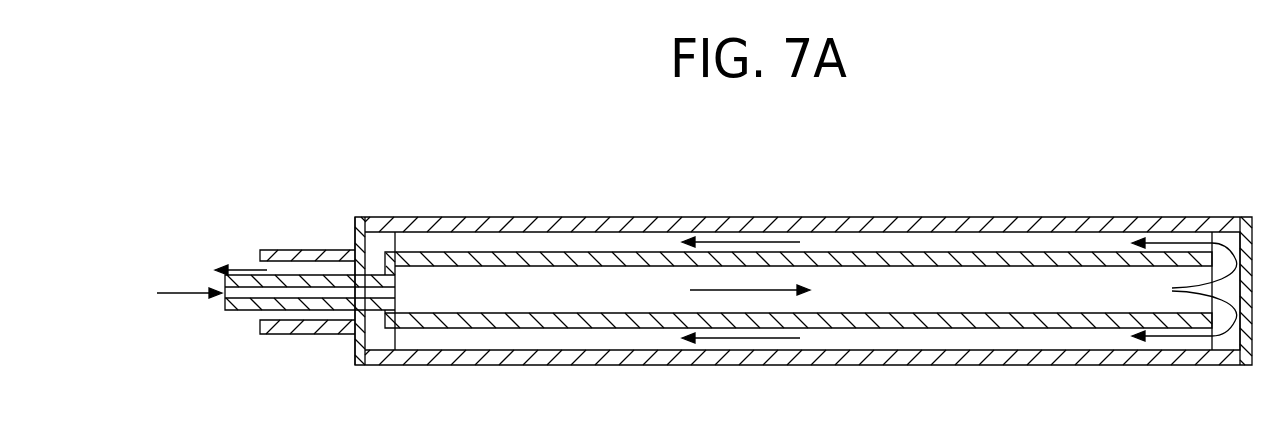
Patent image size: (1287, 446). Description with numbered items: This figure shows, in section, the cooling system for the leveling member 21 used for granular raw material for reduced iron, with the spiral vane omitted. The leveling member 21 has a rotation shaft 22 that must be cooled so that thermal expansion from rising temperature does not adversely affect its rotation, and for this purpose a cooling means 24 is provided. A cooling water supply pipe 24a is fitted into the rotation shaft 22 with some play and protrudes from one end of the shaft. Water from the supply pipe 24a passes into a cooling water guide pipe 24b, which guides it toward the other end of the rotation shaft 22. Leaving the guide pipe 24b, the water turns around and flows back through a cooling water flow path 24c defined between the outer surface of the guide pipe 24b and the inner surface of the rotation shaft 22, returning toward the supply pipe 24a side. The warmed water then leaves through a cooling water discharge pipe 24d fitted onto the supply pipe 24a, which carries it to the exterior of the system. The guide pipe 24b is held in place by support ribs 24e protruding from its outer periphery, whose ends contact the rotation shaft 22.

The leveling member 21 is at (1070, 192).
The rotation shaft 22 is at (817, 218).
The cooling means 24 is at (371, 332).
The cooling water supply pipe 24a is at (240, 313).
The cooling water guide pipe 24b is at (618, 250).
The cooling water flow path 24c is at (917, 338).
The cooling water discharge pipe 24d is at (313, 250).
The support ribs 24e is at (397, 248).